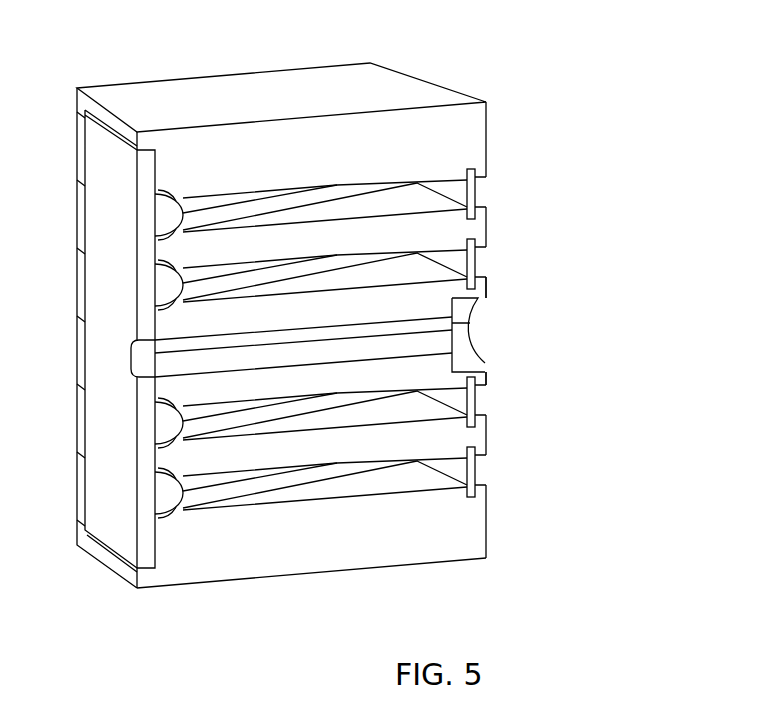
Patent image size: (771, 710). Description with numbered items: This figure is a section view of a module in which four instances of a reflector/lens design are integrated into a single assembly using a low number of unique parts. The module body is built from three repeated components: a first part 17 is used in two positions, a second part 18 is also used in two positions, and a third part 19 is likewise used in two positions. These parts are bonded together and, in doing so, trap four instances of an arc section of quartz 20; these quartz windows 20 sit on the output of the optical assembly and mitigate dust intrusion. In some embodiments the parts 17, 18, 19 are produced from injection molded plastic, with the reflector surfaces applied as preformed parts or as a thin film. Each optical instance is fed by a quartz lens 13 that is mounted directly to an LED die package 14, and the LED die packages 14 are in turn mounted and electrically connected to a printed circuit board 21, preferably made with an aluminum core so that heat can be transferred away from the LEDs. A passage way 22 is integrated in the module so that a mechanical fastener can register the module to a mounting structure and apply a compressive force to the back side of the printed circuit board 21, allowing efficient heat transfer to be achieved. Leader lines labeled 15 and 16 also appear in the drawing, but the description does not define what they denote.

The quartz lens 13 is at (158, 218).
The LED die package 14 is at (170, 213).
The reflector panel 15 is at (358, 185).
The reflector surface 16 is at (306, 212).
The first part 17 is at (486, 146).
The second part 18 is at (486, 231).
The third part 19 is at (486, 301).
The quartz window 20 is at (475, 188).
The printed circuit board 21 is at (117, 358).
The passage way 22 is at (440, 332).